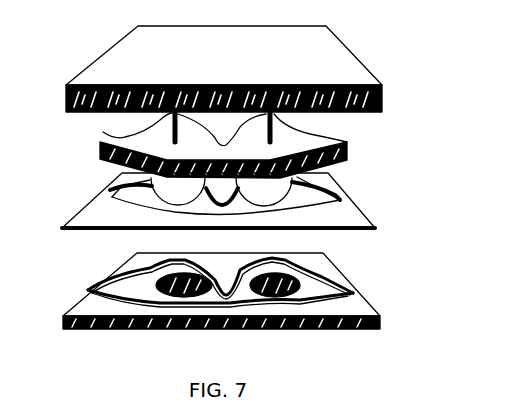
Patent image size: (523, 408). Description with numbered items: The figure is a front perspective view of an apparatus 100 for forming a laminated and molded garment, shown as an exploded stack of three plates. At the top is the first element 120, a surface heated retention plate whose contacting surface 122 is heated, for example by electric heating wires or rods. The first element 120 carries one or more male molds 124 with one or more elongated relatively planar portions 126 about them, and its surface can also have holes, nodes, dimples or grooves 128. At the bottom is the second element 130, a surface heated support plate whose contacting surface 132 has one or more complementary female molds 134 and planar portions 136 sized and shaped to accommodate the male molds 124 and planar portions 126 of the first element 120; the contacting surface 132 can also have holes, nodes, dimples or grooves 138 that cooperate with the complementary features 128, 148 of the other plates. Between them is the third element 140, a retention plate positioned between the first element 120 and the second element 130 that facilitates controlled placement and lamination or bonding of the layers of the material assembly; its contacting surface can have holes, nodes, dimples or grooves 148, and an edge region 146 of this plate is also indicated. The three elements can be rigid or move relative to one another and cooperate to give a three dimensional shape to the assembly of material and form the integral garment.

The apparatus for forming a laminated and molded garment 100 is at (55, 43).
The first element 120 is at (370, 130).
The contacting surface 122 is at (216, 214).
The male mold 124 is at (178, 189).
The planar portion 126 is at (122, 135).
The holes, nodes, dimples or grooves 128 is at (112, 160).
The second element 130 is at (231, 299).
The contacting surface 132 is at (220, 272).
The female mold 134 is at (262, 294).
The planar portion 136 is at (125, 282).
The holes, nodes, dimples or grooves 138 is at (90, 329).
The third element 140 is at (222, 211).
The frame front edge 146 is at (78, 225).
The holes, nodes, dimples or grooves 148 is at (327, 193).